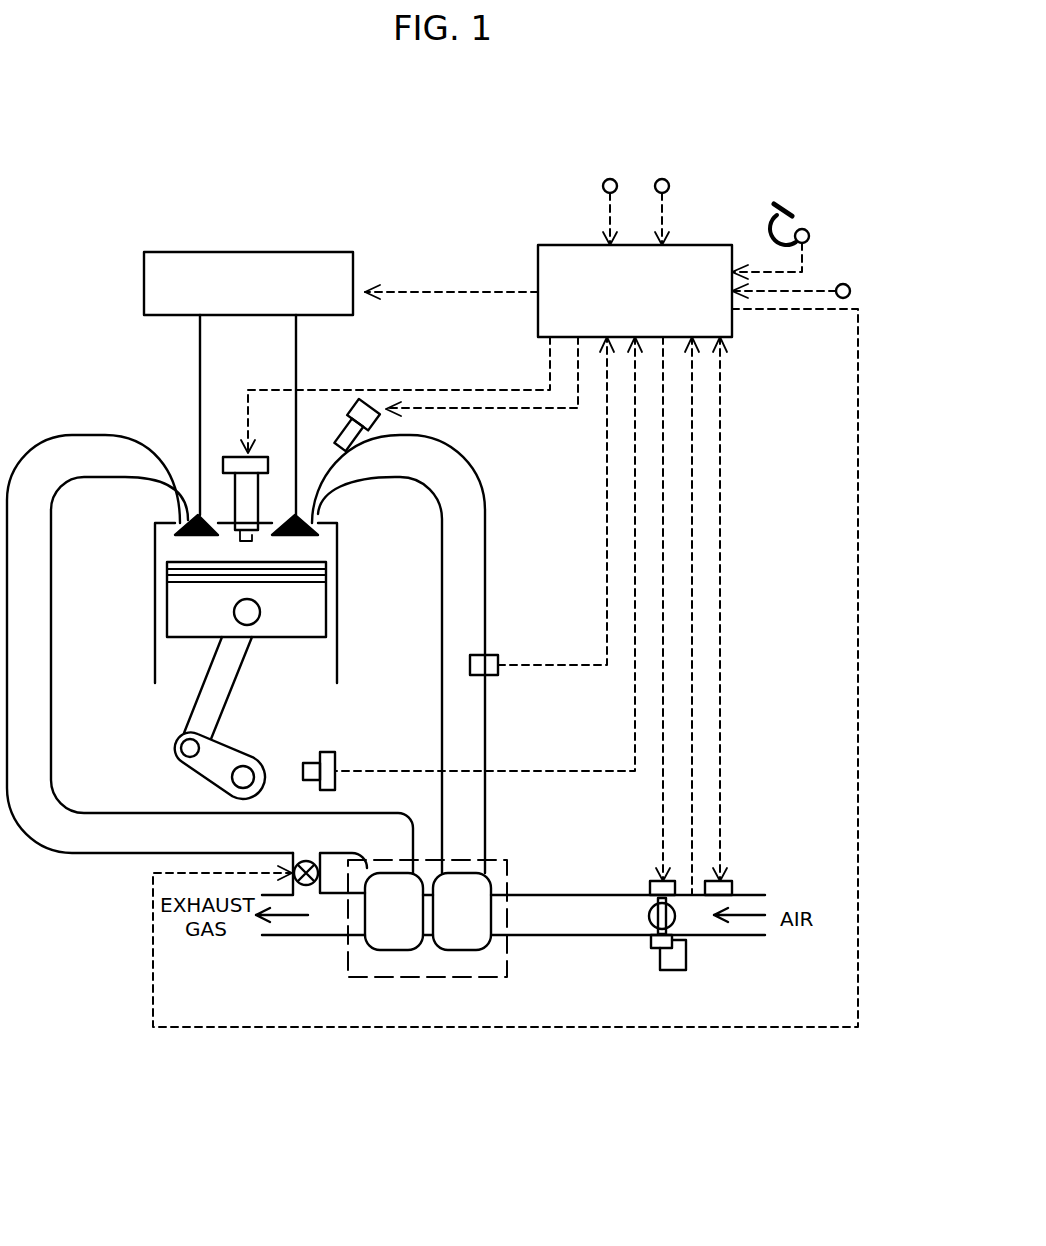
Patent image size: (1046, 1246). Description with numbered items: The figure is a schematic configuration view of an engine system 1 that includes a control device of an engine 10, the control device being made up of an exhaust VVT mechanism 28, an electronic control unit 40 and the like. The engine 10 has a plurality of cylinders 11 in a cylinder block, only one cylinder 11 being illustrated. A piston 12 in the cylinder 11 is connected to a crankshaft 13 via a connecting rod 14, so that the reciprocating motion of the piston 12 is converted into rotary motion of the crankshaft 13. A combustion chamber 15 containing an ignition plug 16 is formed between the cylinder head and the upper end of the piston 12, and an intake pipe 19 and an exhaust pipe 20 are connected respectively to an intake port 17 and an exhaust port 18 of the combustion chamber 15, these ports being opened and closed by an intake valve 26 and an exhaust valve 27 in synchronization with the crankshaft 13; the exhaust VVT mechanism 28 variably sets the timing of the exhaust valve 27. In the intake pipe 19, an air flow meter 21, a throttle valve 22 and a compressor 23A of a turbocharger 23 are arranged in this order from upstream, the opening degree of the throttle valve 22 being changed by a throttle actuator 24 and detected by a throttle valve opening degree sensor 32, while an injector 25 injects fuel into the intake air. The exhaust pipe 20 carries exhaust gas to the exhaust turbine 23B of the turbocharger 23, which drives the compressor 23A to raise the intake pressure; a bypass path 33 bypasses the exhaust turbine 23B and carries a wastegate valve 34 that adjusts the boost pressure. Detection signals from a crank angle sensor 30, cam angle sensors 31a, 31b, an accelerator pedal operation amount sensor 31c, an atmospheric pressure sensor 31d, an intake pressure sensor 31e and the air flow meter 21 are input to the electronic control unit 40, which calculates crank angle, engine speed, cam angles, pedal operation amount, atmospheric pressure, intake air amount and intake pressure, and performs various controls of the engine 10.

The engine system 1 is at (440, 163).
The engine 10 is at (348, 582).
The cylinder 11 is at (337, 552).
The piston 12 is at (315, 630).
The crankshaft 13 is at (216, 783).
The connecting rod 14 is at (232, 697).
The combustion chamber 15 is at (190, 538).
The ignition plug 16 is at (262, 490).
The intake port 17 is at (320, 523).
The exhaust port 18 is at (177, 520).
The intake pipe 19 is at (461, 452).
The exhaust pipe 20 is at (96, 435).
The air flow meter 21 is at (733, 880).
The throttle valve 22 is at (650, 912).
The turbocharger 23 is at (420, 978).
The compressor 23A is at (462, 952).
The exhaust turbine 23B is at (383, 952).
The throttle actuator 24 is at (648, 880).
The injector 25 is at (347, 400).
The intake valve 26 is at (312, 514).
The exhaust valve 27 is at (195, 512).
The exhaust VVT mechanism 28 is at (144, 272).
The crank angle sensor 30 is at (330, 752).
The cam angle sensor 31a is at (602, 187).
The cam angle sensor 31b is at (670, 187).
The accelerator pedal operation amount sensor 31c is at (809, 232).
The atmospheric pressure sensor 31d is at (850, 291).
The intake pressure sensor 31e is at (492, 654).
The throttle valve opening degree sensor 32 is at (655, 960).
The bypass path 33 is at (298, 860).
The wastegate valve 34 is at (318, 888).
The electronic control unit 40 is at (538, 258).